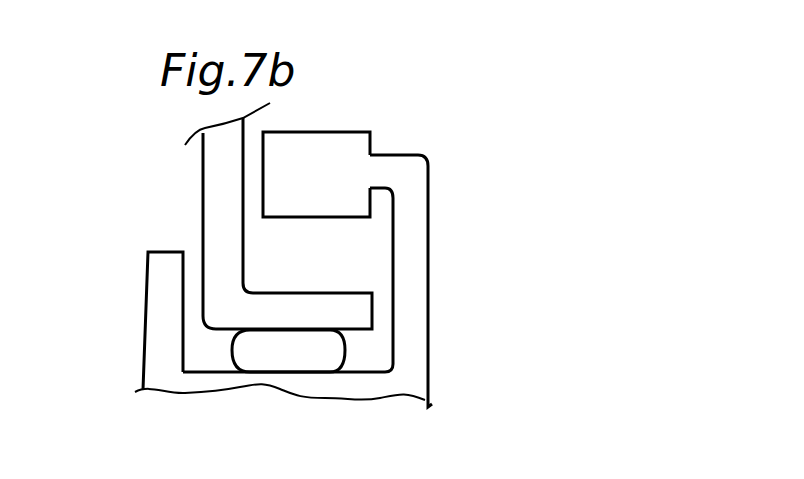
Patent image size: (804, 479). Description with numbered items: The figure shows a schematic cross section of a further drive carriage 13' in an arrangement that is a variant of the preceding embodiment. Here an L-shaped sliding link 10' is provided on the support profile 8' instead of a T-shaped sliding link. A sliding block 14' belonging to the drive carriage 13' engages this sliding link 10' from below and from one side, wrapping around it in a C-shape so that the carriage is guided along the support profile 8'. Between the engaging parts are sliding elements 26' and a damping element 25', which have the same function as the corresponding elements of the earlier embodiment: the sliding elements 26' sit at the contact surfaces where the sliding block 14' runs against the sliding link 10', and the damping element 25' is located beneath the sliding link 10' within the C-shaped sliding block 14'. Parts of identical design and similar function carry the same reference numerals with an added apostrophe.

The support profile 8' is at (187, 216).
The sliding link 10' is at (384, 302).
The drive carriage 13' is at (480, 241).
The sliding block 14' is at (395, 294).
The damping element 25' is at (392, 347).
The sliding elements 26' is at (233, 226).